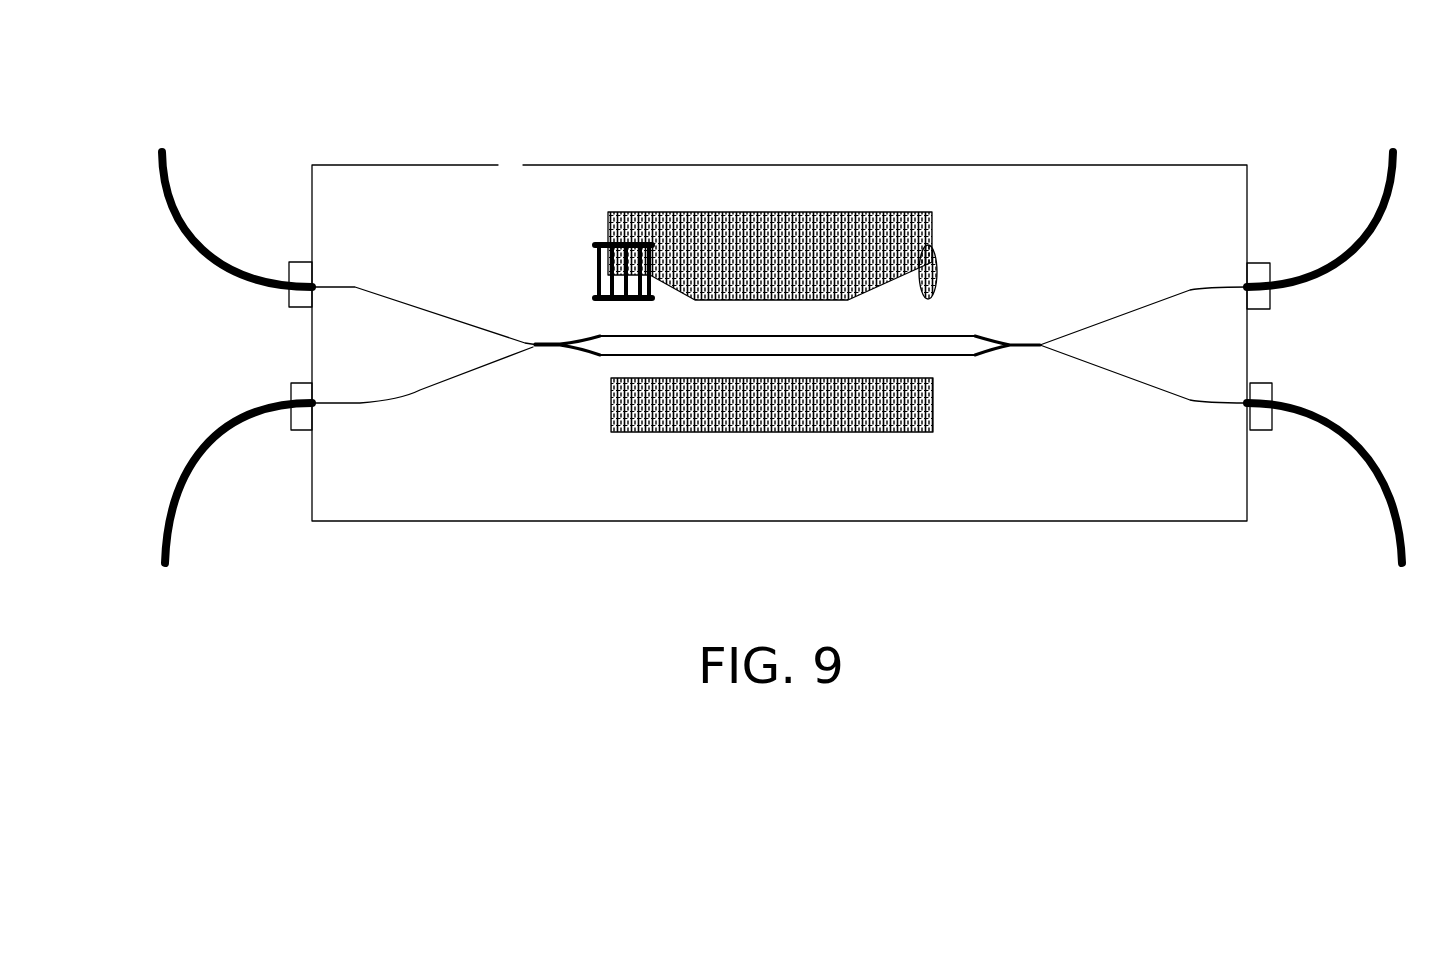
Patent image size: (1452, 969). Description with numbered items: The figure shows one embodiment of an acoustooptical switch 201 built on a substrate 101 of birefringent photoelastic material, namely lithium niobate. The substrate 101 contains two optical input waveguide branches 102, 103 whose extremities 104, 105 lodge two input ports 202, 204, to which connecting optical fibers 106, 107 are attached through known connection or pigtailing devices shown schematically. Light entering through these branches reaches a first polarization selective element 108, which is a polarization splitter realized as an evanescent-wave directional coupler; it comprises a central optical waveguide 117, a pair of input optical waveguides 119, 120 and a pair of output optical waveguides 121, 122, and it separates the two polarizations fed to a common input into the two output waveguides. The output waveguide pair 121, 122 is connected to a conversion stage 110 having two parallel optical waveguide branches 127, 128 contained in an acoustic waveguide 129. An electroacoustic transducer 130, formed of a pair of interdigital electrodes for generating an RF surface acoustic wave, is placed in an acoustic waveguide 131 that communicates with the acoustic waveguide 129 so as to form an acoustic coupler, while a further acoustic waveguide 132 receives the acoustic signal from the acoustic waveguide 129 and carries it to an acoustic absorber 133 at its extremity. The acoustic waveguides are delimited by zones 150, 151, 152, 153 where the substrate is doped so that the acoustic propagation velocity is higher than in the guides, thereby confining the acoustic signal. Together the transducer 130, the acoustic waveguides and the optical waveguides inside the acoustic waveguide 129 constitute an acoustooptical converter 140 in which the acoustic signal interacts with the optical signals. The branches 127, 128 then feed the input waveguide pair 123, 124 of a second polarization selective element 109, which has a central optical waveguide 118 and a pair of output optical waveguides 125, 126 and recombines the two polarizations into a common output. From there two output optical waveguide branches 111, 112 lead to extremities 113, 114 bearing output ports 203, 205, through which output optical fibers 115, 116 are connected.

The substrate 101 is at (1156, 172).
The acoustooptical switch 201 is at (594, 86).
The optical input waveguide branch 102 is at (420, 302).
The optical input waveguide branch 103 is at (396, 395).
The extremity 104 is at (330, 282).
The extremity 105 is at (360, 400).
The connecting optical fiber 106 is at (188, 242).
The connecting optical fiber 107 is at (150, 514).
The polarization selective element 108 is at (540, 322).
The polarization selective element 109 is at (1038, 400).
The conversion stage 110 is at (652, 348).
The output optical waveguide branch 111 is at (1120, 308).
The output optical waveguide branch 112 is at (1163, 395).
The extremity 113 is at (1215, 290).
The extremity 114 is at (1220, 405).
The output optical fiber 115 is at (1378, 240).
The output optical fiber 116 is at (1372, 441).
The central optical waveguide 117 is at (545, 350).
The central optical waveguide 118 is at (1012, 340).
The input optical waveguide 119 is at (512, 340).
The input optical waveguide 120 is at (505, 375).
The output optical waveguide 121 is at (585, 330).
The output optical waveguide 122 is at (590, 360).
The input optical waveguide 123 is at (968, 336).
The input optical waveguide 124 is at (970, 357).
The output optical waveguide 125 is at (1052, 338).
The output optical waveguide 126 is at (1050, 358).
The parallel optical waveguide branch 127 is at (835, 378).
The parallel optical waveguide branch 128 is at (905, 392).
The acoustic waveguide 129 is at (655, 365).
The electroacoustic transducer 130 is at (598, 244).
The acoustic waveguide 131 is at (680, 235).
The acoustic waveguide 132 is at (848, 300).
The acoustic absorber 133 is at (938, 275).
The acoustooptical converter 140 is at (770, 199).
The zone 150 is at (845, 214).
The zone 151 is at (636, 308).
The zone 152 is at (755, 428).
The zone 153 is at (835, 378).
The input port 202 is at (305, 292).
The output port 203 is at (1255, 282).
The input port 204 is at (305, 410).
The output port 205 is at (1252, 405).